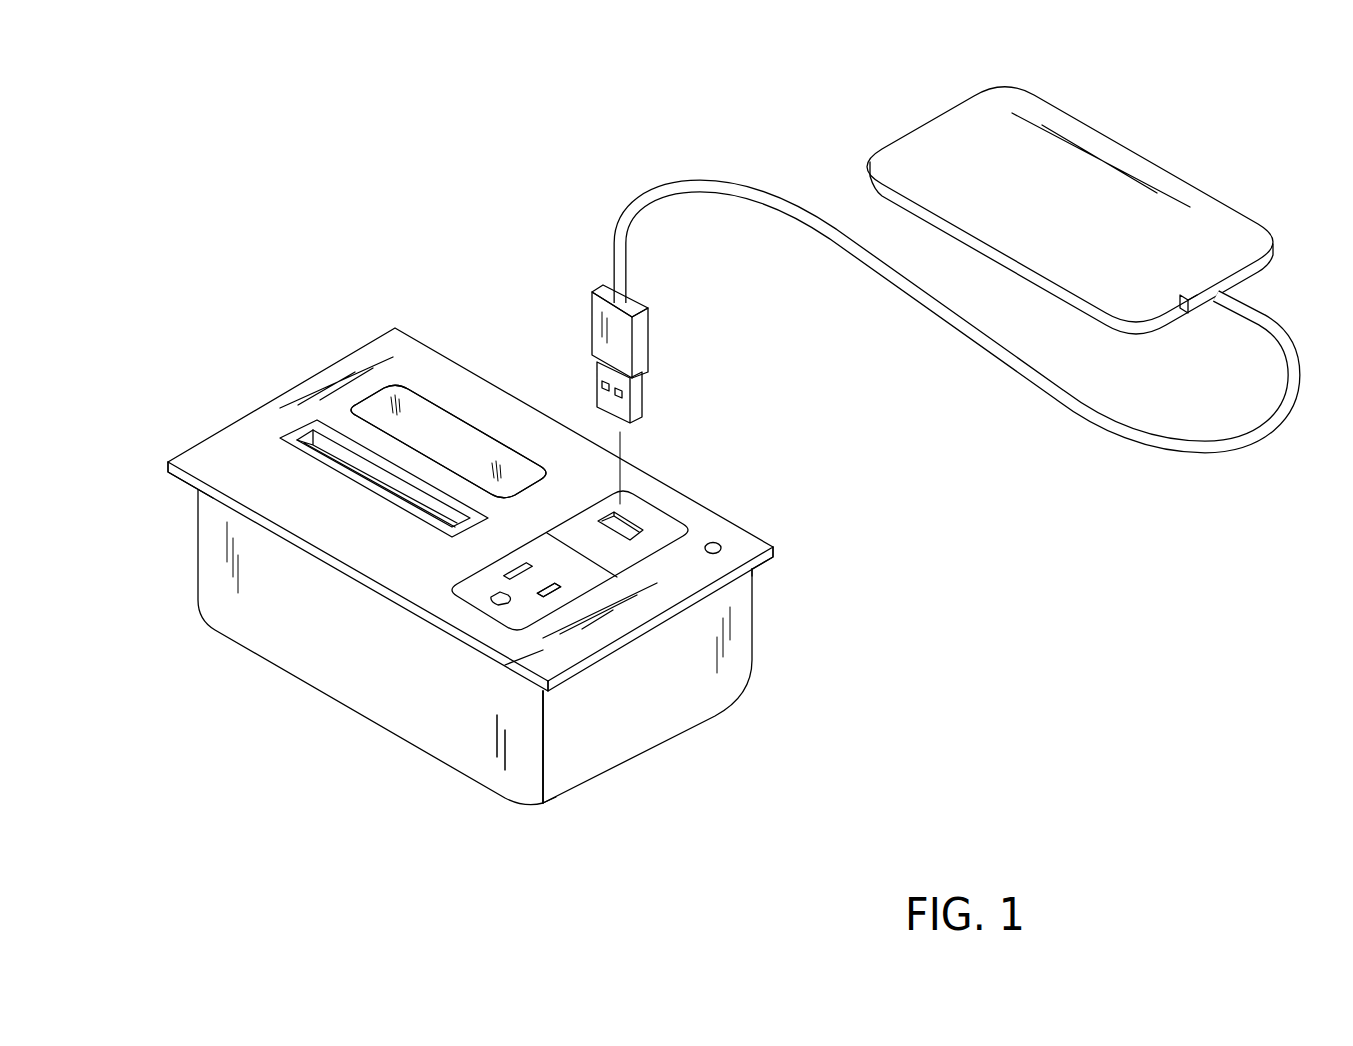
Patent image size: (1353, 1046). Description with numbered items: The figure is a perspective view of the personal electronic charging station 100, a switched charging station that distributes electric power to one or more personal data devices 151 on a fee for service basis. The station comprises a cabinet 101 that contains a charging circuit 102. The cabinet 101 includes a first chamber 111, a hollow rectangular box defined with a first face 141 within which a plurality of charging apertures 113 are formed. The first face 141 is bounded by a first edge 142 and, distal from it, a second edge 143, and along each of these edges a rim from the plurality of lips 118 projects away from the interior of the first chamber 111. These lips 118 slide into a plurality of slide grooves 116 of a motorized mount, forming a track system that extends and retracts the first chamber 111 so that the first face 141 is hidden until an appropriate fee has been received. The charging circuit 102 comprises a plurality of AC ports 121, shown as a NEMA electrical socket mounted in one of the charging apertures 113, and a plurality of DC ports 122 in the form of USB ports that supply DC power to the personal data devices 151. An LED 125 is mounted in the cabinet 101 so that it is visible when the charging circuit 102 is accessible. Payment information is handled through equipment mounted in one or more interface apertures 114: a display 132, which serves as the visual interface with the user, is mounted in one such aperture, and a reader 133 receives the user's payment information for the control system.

The personal electronic charging station 100 is at (380, 140).
The cabinet 101 is at (250, 413).
The charging circuit 102 is at (487, 557).
The first chamber 111 is at (663, 700).
The plurality of charging apertures 113 is at (560, 597).
The interface apertures 114 is at (371, 385).
The plurality of slide grooves 116 is at (776, 550).
The plurality of lips 118 is at (307, 381).
The plurality of AC ports 121 is at (482, 586).
The plurality of DC ports 122 is at (629, 522).
The LED 125 is at (720, 547).
The display 132 is at (543, 468).
The reader 133 is at (410, 513).
The first face 141 is at (538, 665).
The first edge 142 is at (167, 462).
The second edge 143 is at (556, 692).
The personal data devices 151 is at (1093, 157).